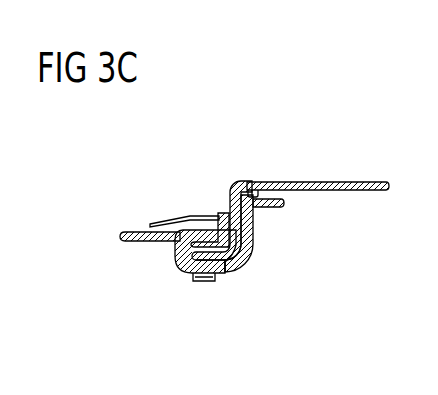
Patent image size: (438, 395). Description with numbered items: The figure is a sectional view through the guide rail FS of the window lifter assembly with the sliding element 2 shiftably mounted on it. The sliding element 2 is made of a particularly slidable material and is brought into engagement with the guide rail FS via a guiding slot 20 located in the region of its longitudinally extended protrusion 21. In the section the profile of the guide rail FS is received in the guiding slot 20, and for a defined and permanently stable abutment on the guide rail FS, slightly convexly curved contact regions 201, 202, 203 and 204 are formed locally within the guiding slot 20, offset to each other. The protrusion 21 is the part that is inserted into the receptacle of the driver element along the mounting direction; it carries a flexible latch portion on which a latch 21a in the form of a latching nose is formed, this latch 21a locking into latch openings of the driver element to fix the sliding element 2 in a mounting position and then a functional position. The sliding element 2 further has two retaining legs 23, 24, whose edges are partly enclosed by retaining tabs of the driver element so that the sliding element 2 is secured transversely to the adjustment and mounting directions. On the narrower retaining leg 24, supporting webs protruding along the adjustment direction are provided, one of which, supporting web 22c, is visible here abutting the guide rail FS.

The sliding element 2 is at (166, 278).
The guiding slot 20 is at (240, 256).
The contact region 201 is at (213, 245).
The contact region 202 is at (211, 274).
The contact region 203 is at (252, 222).
The contact region 204 is at (220, 211).
The protrusion 21 is at (178, 259).
The latch 21a is at (198, 282).
The supporting web 22c is at (253, 181).
The retaining leg 23 is at (127, 231).
The retaining leg 24 is at (279, 207).
The guide rail FS is at (375, 181).